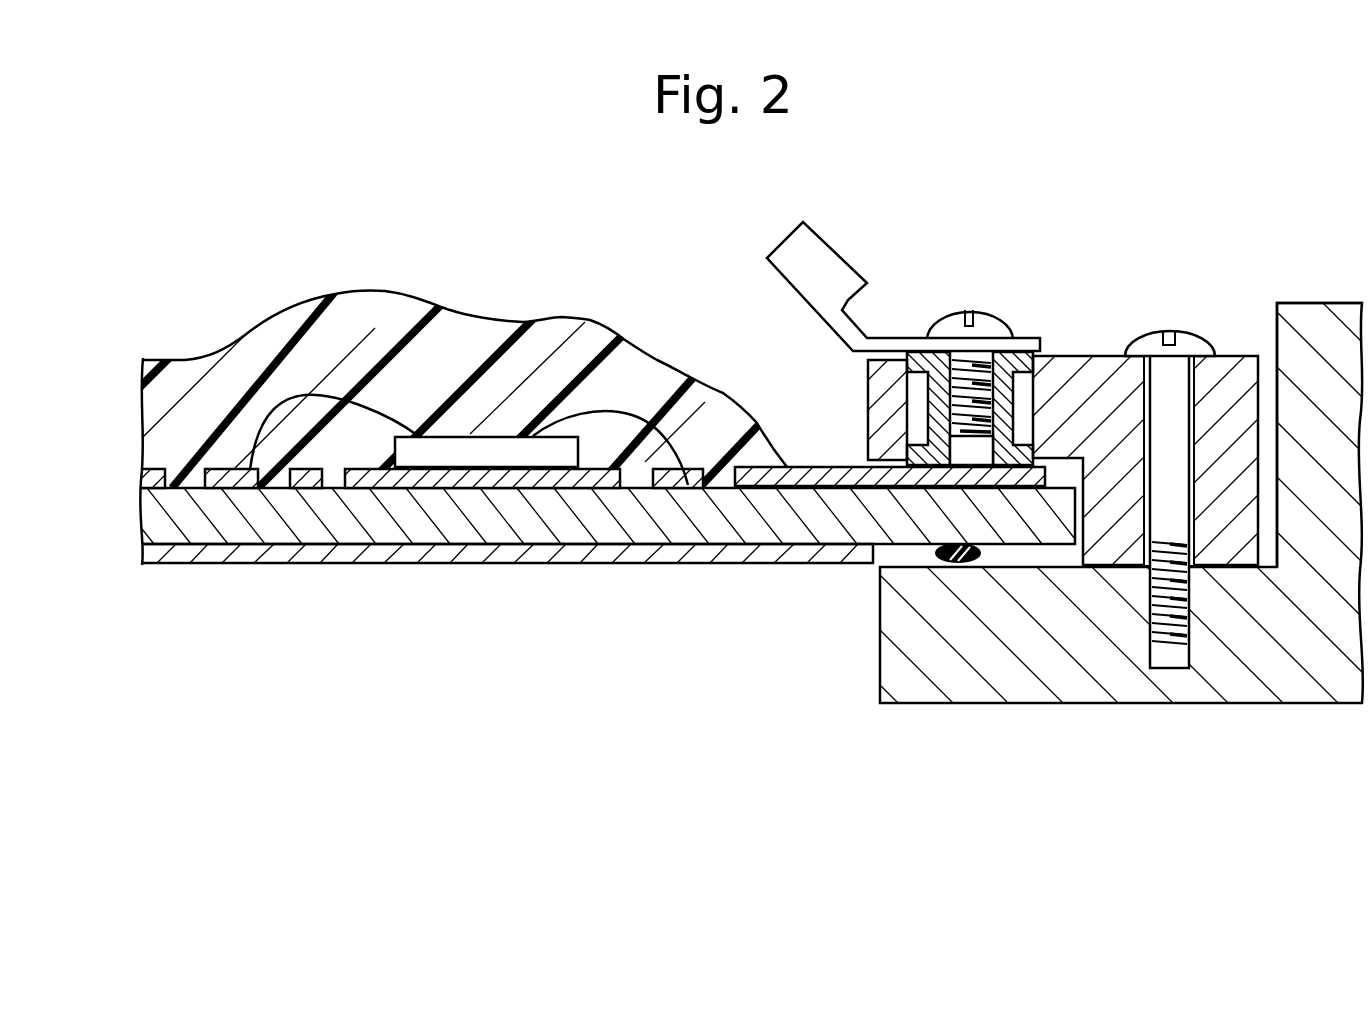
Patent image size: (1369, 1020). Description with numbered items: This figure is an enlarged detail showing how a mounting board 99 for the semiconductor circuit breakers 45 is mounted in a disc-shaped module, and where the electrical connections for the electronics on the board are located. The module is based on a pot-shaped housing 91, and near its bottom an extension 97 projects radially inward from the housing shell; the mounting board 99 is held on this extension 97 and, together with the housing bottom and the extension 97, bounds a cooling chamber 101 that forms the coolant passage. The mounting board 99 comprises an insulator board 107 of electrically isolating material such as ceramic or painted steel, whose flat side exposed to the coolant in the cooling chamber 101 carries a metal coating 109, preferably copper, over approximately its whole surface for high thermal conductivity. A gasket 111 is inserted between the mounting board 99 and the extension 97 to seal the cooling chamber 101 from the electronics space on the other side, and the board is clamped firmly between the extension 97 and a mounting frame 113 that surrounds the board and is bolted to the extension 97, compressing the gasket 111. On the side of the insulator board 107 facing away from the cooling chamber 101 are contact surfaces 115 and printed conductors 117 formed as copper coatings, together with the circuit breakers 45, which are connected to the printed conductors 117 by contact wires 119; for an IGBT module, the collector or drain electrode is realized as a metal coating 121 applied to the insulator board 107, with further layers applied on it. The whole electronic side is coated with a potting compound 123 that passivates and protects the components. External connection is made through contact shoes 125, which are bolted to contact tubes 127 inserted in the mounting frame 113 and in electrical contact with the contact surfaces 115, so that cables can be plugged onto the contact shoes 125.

The semiconductor circuit breaker 45 is at (450, 443).
The pot-shaped housing 91 is at (1335, 295).
The extension 97 is at (1087, 650).
The mounting board 99 is at (602, 570).
The cooling chamber 101 is at (527, 669).
The insulator board 107 is at (413, 513).
The metal coating 109 is at (580, 553).
The gasket 111 is at (963, 560).
The mounting frame 113 is at (1218, 393).
The contact surfaces 115 is at (823, 465).
The printed conductors 117 is at (688, 480).
The contact wires 119 is at (285, 395).
The metal coating 121 is at (517, 470).
The potting compound 123 is at (180, 388).
The contact shoe 125 is at (836, 278).
The contact tube 127 is at (1003, 402).